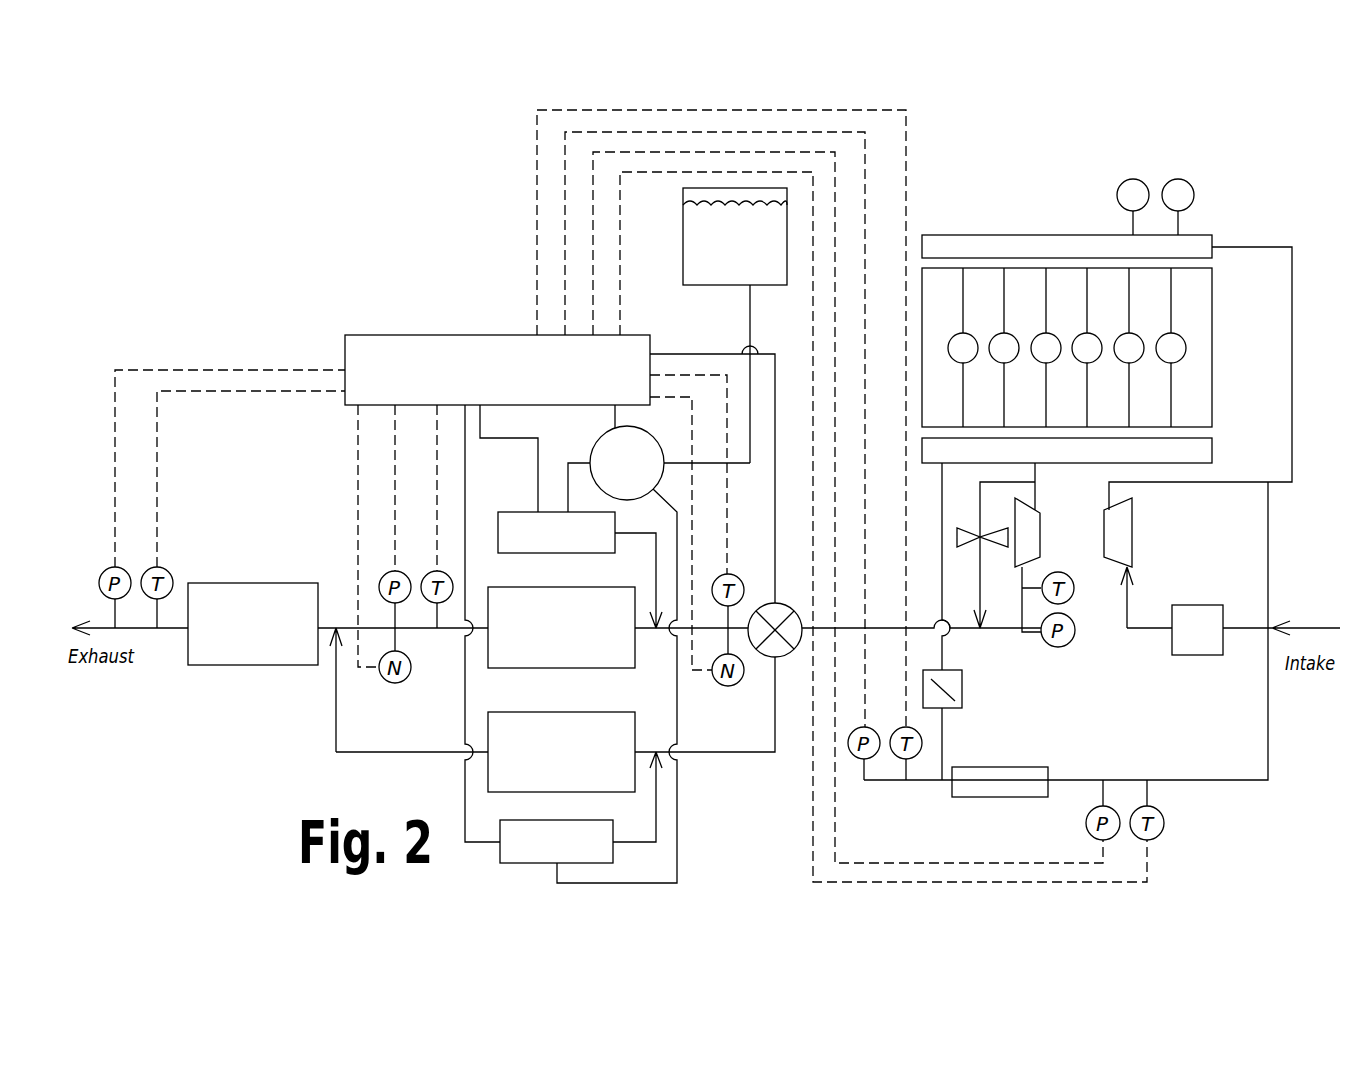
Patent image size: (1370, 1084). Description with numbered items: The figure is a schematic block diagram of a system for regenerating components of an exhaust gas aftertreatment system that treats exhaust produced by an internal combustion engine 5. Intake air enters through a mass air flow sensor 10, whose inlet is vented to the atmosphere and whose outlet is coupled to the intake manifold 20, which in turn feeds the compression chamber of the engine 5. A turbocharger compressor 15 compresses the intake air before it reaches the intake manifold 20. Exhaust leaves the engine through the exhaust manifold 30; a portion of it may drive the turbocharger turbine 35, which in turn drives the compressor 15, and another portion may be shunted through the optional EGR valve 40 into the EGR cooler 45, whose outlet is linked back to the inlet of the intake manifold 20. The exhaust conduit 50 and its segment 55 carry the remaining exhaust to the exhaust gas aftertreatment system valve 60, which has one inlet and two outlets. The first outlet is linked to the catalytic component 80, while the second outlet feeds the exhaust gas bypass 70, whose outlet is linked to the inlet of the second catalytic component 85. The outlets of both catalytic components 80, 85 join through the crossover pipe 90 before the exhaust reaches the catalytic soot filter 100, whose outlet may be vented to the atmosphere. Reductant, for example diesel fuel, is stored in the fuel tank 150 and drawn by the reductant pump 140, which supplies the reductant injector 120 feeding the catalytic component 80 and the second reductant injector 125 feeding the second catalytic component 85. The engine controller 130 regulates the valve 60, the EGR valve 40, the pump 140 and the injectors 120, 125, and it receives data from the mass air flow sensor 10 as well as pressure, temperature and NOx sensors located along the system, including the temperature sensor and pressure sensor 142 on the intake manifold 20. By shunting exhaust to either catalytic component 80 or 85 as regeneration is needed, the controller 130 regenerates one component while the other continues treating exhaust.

The internal combustion engine 5 is at (1178, 357).
The mass air flow sensor 10 is at (1210, 605).
The turbocharger compressor 15 is at (1128, 530).
The intake manifold 20 is at (1200, 247).
The exhaust manifold 30 is at (1192, 451).
The turbocharger turbine 35 is at (1030, 532).
The EGR valve 40 is at (962, 672).
The EGR cooler 45 is at (1040, 767).
The exhaust conduit 50 is at (876, 626).
The exhaust conduit segment 55 is at (670, 636).
The exhaust gas aftertreatment system valve 60 is at (791, 610).
The exhaust gas bypass 70 is at (700, 752).
The catalytic component 80 is at (555, 668).
The second catalytic component 85 is at (575, 792).
The crossover pipe 90 is at (336, 706).
The catalytic soot filter 100 is at (212, 583).
The reductant injector 120 is at (498, 530).
The second reductant injector 125 is at (520, 863).
The engine controller 130 is at (412, 335).
The reductant pump 140 is at (598, 446).
The pressure sensor 142 is at (1185, 182).
The fuel tank 150 is at (787, 226).